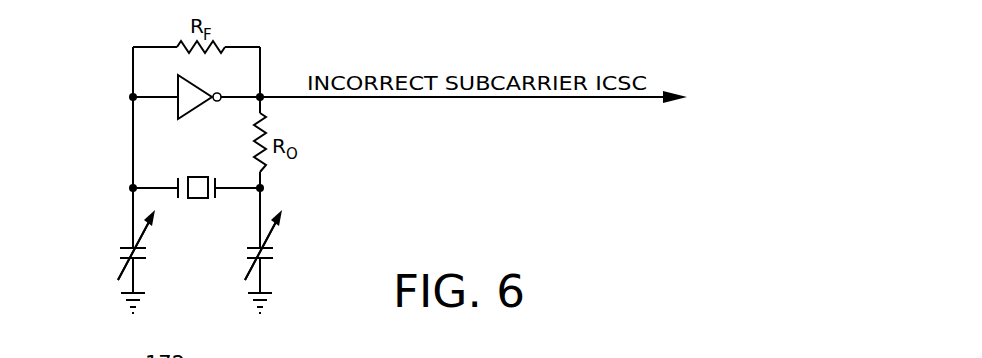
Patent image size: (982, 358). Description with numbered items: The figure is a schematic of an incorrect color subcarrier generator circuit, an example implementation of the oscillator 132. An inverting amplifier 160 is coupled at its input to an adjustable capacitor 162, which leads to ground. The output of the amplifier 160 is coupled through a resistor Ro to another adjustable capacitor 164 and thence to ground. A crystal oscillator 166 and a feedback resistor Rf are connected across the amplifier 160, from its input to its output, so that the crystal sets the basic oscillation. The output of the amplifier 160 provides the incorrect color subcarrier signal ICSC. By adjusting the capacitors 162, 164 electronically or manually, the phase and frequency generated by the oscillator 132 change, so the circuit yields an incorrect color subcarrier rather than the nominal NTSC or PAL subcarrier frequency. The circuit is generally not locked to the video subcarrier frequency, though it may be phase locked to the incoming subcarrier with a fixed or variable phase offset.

The oscillator 132 is at (281, 58).
The inverting amplifier 160 is at (188, 110).
The adjustable capacitor 162 is at (128, 246).
The adjustable capacitor 164 is at (268, 255).
The crystal oscillator 166 is at (197, 198).